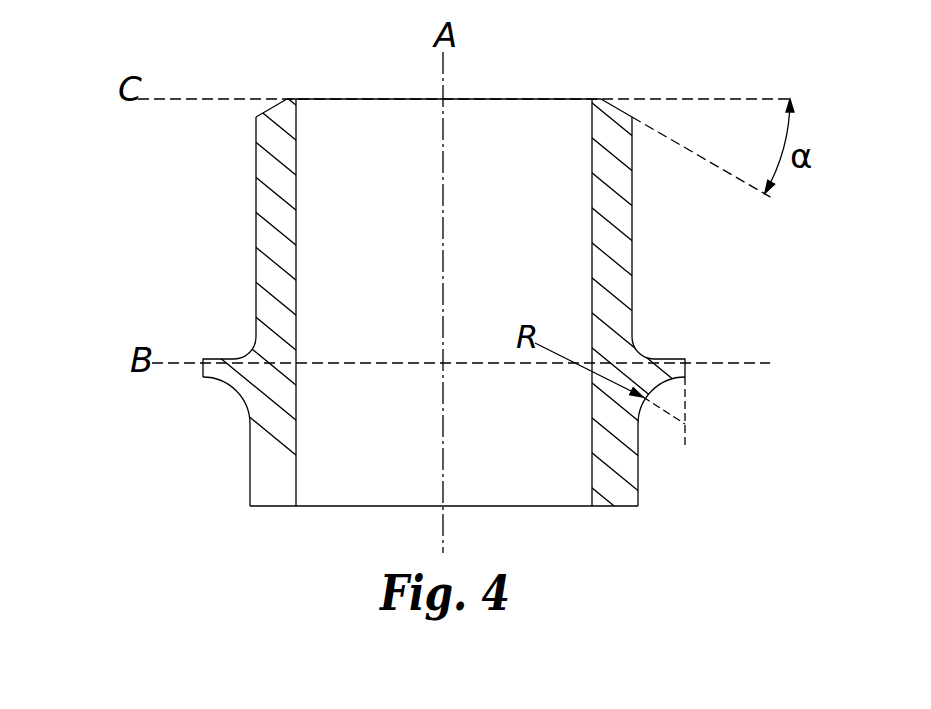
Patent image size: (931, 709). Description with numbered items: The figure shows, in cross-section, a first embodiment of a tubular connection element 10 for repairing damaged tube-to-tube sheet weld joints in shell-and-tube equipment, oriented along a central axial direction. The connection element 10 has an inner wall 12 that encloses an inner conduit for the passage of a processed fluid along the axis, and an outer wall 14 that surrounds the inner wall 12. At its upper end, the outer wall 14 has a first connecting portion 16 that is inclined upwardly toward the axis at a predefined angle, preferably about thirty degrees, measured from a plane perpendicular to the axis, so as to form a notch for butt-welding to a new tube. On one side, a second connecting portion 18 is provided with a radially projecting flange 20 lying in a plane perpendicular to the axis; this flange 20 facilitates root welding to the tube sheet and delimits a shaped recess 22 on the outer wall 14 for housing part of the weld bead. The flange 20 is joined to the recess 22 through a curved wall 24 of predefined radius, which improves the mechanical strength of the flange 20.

The tubular connection element 10 is at (158, 217).
The inner wall 12 is at (337, 478).
The outer wall 14 is at (633, 270).
The first connecting portion 16 is at (617, 102).
The second connecting portion 18 is at (248, 483).
The radially projecting flange 20 is at (207, 360).
The shaped recess 22 is at (640, 470).
The curved wall 24 is at (233, 393).